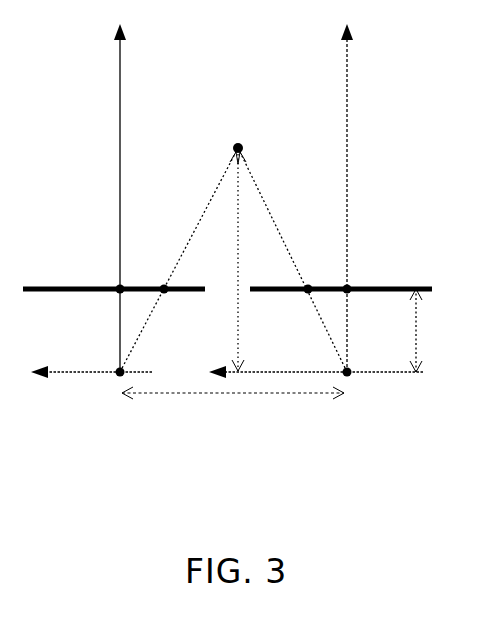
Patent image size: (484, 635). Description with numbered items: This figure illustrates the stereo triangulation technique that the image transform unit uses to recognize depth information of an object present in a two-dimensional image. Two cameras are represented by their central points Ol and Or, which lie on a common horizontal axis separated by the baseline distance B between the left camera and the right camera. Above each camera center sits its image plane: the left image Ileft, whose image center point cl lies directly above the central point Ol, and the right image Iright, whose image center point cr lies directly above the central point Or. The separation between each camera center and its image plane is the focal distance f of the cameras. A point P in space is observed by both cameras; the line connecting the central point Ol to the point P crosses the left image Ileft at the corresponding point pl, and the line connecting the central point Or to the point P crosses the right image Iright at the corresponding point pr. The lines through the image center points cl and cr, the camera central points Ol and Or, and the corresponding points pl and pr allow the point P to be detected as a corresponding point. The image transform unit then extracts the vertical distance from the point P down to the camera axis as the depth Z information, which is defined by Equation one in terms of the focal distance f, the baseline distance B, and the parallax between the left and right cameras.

The corresponding point P is at (233, 245).
The depth information Z is at (246, 262).
The distance between the left camera and the right camera B is at (233, 406).
The focal distance of the cameras f is at (424, 330).
The left image Ileft is at (114, 270).
The right image Iright is at (341, 270).
The image center point of the left image cl is at (110, 305).
The image center point of the right image cr is at (361, 305).
The corresponding point of the left image pl is at (176, 305).
The corresponding point of the right image pr is at (298, 305).
The central point of the left camera Ol is at (91, 219).
The central point of the right camera Or is at (316, 219).